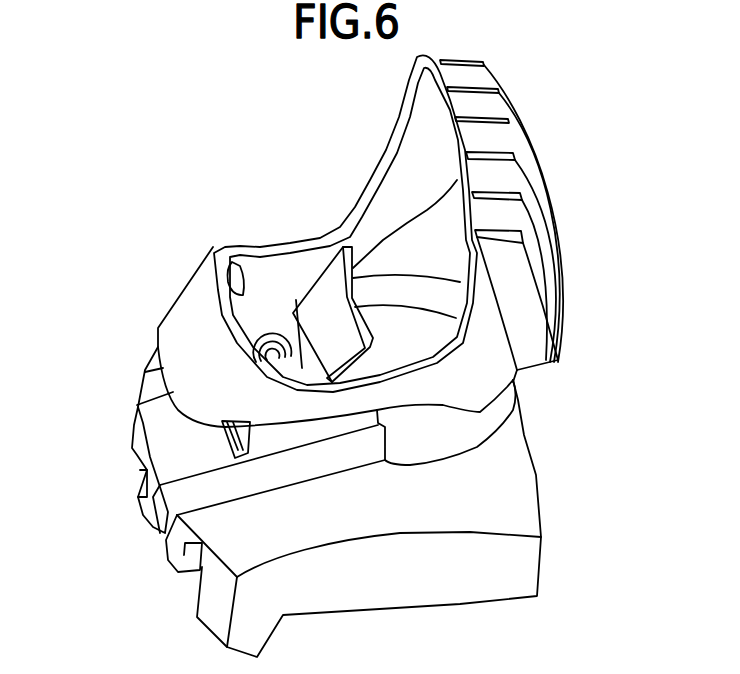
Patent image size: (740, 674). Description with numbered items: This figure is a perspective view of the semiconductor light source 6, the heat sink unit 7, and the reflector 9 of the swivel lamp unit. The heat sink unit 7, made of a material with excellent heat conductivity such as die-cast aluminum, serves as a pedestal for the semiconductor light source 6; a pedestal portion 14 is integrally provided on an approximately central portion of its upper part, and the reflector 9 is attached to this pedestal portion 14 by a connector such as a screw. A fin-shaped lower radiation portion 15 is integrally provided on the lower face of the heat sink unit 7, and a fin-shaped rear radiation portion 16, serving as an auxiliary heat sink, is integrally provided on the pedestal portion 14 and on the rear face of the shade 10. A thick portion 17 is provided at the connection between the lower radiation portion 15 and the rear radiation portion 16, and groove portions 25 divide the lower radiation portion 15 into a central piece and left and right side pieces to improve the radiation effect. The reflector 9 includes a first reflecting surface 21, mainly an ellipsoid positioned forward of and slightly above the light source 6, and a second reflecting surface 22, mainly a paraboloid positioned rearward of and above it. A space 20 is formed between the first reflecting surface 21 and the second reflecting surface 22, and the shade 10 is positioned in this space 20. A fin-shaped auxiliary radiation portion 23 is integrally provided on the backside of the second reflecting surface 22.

The semiconductor light source 6 is at (267, 326).
The heat sink unit 7 is at (538, 474).
The reflector 9 is at (158, 323).
The shade 10 is at (333, 267).
The pedestal portion 14 is at (296, 300).
The lower radiation portion 15 is at (140, 468).
The rear radiation portion 16 is at (373, 353).
The thick portion 17 is at (230, 428).
The space 20 is at (373, 240).
The first reflecting surface 21 is at (228, 242).
The second reflecting surface 22 is at (440, 97).
The auxiliary radiation portion 23 is at (490, 75).
The groove portions 25 is at (152, 385).